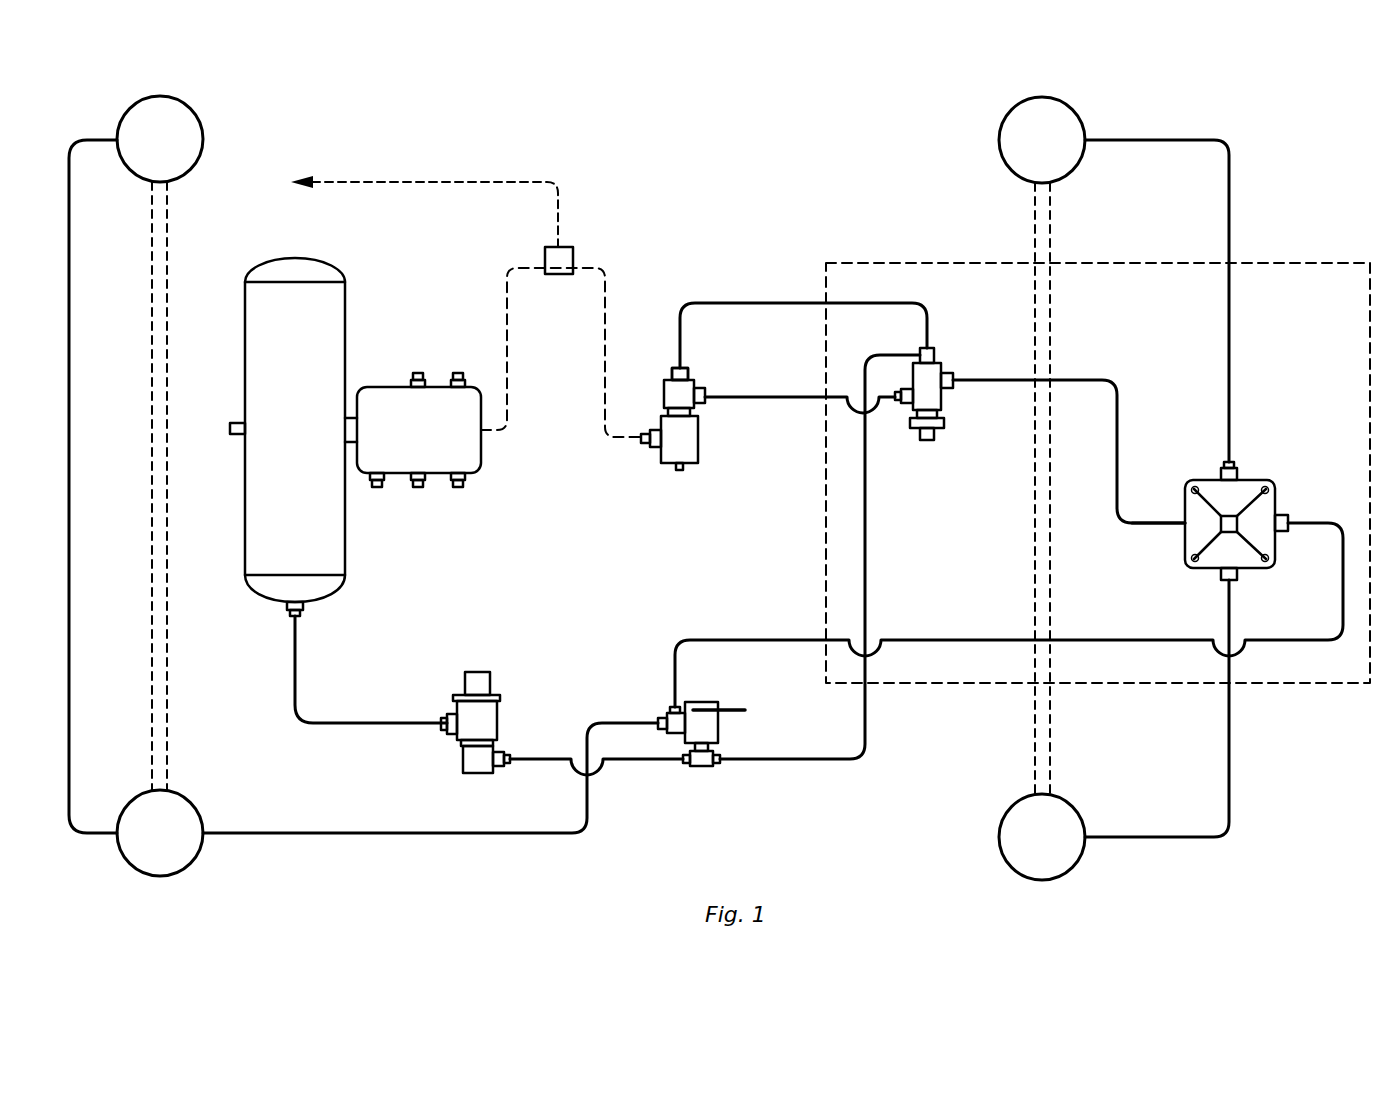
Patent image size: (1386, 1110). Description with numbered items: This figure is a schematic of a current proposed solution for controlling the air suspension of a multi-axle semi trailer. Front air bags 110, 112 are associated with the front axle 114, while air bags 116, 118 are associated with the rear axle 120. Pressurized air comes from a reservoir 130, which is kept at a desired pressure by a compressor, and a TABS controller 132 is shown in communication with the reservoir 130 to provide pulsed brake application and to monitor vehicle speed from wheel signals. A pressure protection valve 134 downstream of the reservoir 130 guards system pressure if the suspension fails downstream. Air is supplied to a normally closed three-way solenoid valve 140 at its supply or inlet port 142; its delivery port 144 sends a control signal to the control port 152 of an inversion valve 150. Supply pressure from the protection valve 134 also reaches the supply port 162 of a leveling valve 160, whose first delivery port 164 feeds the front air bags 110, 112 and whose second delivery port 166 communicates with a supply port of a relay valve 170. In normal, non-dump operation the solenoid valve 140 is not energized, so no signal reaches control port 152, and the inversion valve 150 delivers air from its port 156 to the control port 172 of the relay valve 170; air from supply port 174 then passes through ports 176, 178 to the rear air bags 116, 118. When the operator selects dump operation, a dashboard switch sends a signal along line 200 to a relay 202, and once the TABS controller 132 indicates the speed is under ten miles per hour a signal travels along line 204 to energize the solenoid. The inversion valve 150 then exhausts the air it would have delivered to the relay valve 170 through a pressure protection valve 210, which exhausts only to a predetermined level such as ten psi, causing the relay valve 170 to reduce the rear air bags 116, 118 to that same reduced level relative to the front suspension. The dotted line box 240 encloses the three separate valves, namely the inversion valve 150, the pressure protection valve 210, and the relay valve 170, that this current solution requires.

The front air bag 110 is at (183, 132).
The front air bag 112 is at (170, 848).
The front axle 114 is at (162, 600).
The rear air bag 116 is at (1060, 128).
The rear air bag 118 is at (1056, 854).
The rear axle 120 is at (1048, 718).
The reservoir 130 is at (320, 332).
The TABS controller 132 is at (425, 450).
The pressure protection valve 134 is at (478, 676).
The three-way solenoid valve 140 is at (681, 441).
The supply port 142 is at (683, 372).
The delivery port 144 is at (705, 405).
The inversion valve 150 is at (960, 380).
The control port 152 is at (902, 405).
The port 156 is at (953, 378).
The leveling valve 160 is at (702, 724).
The supply port 162 is at (700, 765).
The first delivery port 164 is at (665, 722).
The second delivery port 166 is at (673, 707).
The relay valve 170 is at (1221, 494).
The control port 172 is at (1183, 525).
The supply port 174 is at (1285, 518).
The port 176 is at (1222, 470).
The port 178 is at (1237, 582).
The line 200 is at (498, 182).
The relay 202 is at (545, 250).
The line 204 is at (605, 372).
The pressure protection valve 210 is at (960, 430).
The dotted line box 240 is at (1290, 262).